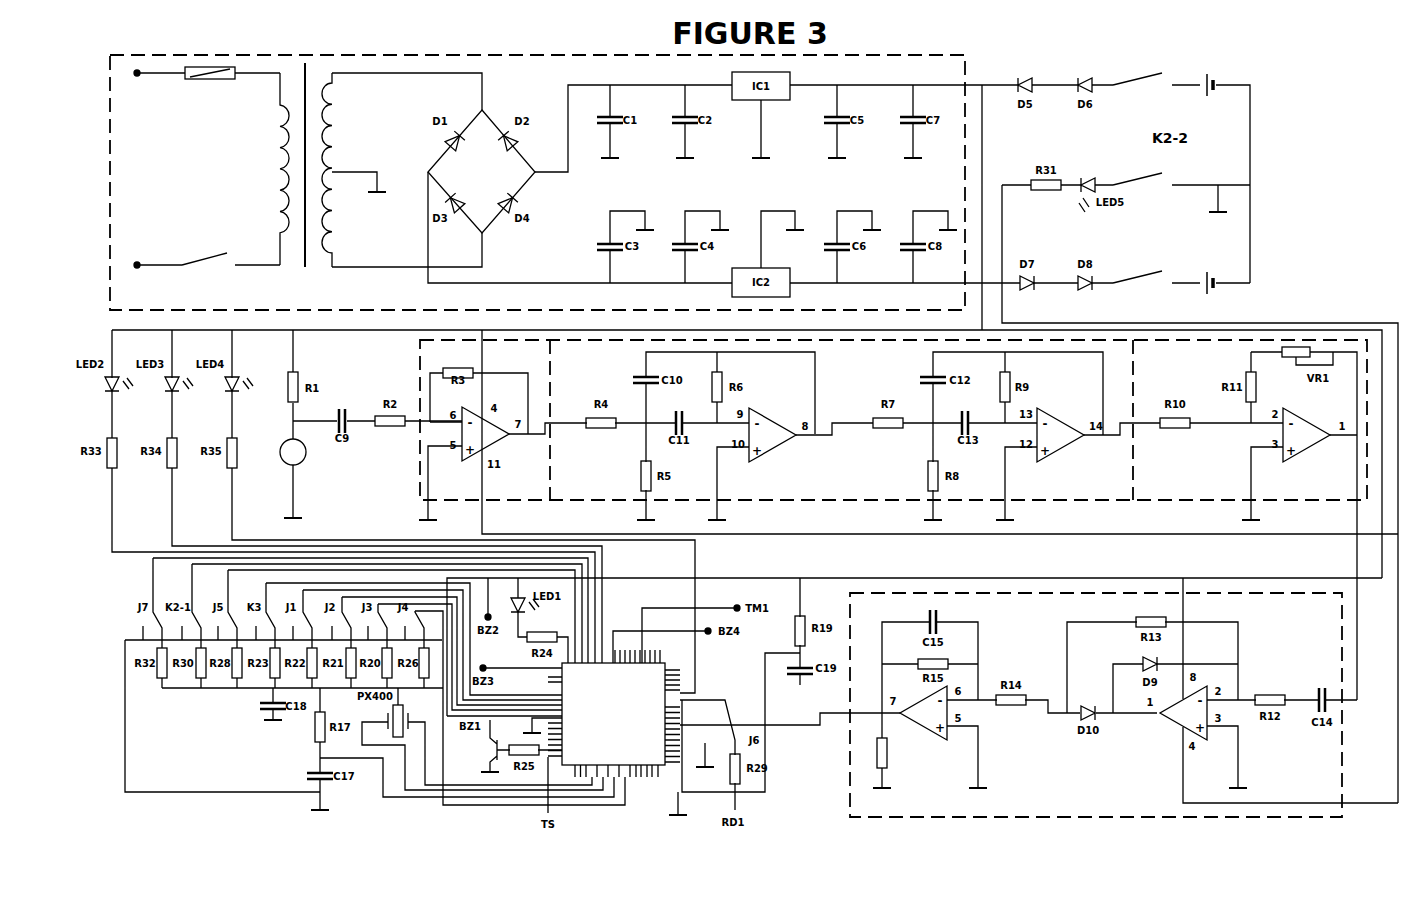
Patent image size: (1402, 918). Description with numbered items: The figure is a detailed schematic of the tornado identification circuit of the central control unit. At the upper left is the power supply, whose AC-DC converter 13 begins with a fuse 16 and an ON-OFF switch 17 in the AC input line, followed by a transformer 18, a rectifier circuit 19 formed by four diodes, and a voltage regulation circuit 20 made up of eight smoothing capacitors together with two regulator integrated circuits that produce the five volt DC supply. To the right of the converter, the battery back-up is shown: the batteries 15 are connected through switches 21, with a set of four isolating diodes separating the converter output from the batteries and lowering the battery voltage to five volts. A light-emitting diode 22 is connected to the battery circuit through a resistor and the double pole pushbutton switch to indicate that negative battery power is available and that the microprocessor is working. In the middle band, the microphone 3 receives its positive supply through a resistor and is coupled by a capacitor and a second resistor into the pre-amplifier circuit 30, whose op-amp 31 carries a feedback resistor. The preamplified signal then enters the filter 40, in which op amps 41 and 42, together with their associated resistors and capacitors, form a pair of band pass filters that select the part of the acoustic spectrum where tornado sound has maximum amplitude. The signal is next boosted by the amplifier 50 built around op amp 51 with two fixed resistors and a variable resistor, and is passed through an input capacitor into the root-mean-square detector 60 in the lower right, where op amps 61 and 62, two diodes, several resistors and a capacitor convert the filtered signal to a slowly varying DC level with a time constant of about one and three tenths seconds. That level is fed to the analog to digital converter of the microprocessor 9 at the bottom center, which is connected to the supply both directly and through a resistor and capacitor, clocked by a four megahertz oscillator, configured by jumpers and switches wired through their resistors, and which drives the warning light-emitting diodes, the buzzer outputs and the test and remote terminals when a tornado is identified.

The microphone 3 is at (293, 452).
The microprocessor 9 is at (614, 713).
The AC-DC converter 13 is at (948, 70).
The batteries 15 is at (1212, 76).
The fuse 16 is at (210, 66).
The ON-OFF switch 17 is at (210, 252).
The transformer 18 is at (305, 62).
The rectifier circuit 19 is at (481, 171).
The voltage regulation circuit 20 is at (777, 184).
The switches 21 is at (1137, 76).
The light-emitting diode 22 is at (1092, 170).
The pre-amplifier circuit 30 is at (893, 420).
The op-amp 31 is at (485, 434).
The filter 40 is at (865, 468).
The op amp 41 is at (772, 435).
The op amp 42 is at (1060, 435).
The amplifier 50 is at (1195, 468).
The op amp 51 is at (1306, 435).
The root-mean-square detector 60 is at (1096, 705).
The op amp 61 is at (1183, 713).
The op amp 62 is at (923, 713).